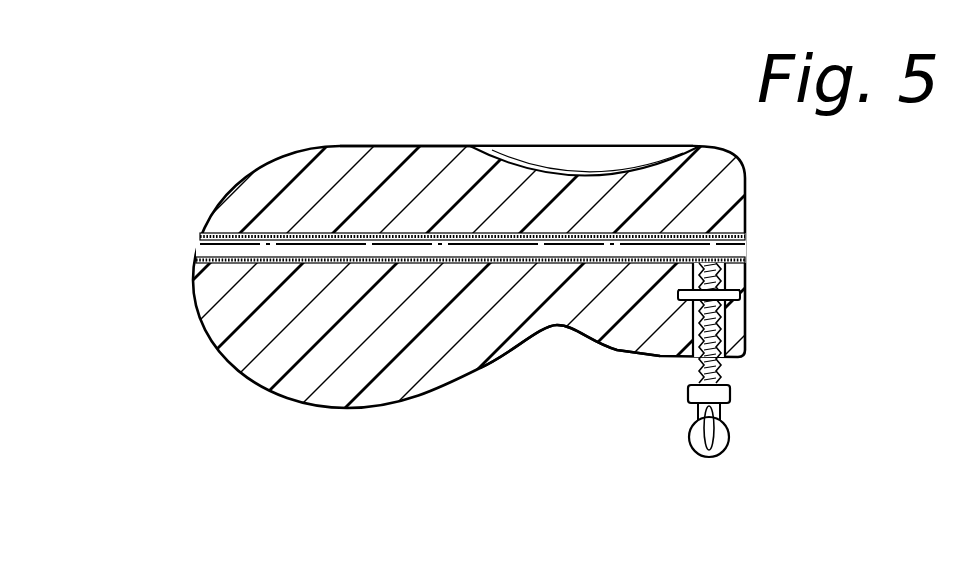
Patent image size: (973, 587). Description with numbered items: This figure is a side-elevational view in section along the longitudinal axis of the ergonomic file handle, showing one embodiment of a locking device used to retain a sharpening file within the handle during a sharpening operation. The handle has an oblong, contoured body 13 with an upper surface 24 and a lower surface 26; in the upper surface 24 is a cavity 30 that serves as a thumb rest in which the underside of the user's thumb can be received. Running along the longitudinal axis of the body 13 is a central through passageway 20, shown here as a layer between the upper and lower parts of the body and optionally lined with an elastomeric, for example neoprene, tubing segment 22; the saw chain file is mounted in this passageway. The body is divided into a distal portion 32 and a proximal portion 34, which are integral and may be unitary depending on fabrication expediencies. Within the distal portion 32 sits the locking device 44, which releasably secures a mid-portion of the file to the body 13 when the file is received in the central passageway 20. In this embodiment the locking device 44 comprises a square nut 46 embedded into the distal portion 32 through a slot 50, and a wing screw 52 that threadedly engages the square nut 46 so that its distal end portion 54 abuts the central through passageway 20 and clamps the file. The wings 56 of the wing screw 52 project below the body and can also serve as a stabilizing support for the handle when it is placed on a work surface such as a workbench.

The oblong, contoured body 13 is at (488, 372).
The central through passageway 20 is at (212, 256).
The tubing segment 22 is at (240, 0).
The upper surface 24 is at (370, 146).
The lower surface 26 is at (615, 352).
The cavity 30 is at (632, 152).
The distal portion 32 is at (746, 313).
The proximal portion 34 is at (242, 290).
The locking device 44 is at (733, 393).
The square nut 46 is at (678, 302).
The slot 50 is at (746, 297).
The wing screw 52 is at (724, 367).
The distal end portion 54 is at (745, 258).
The wings 56 is at (722, 436).